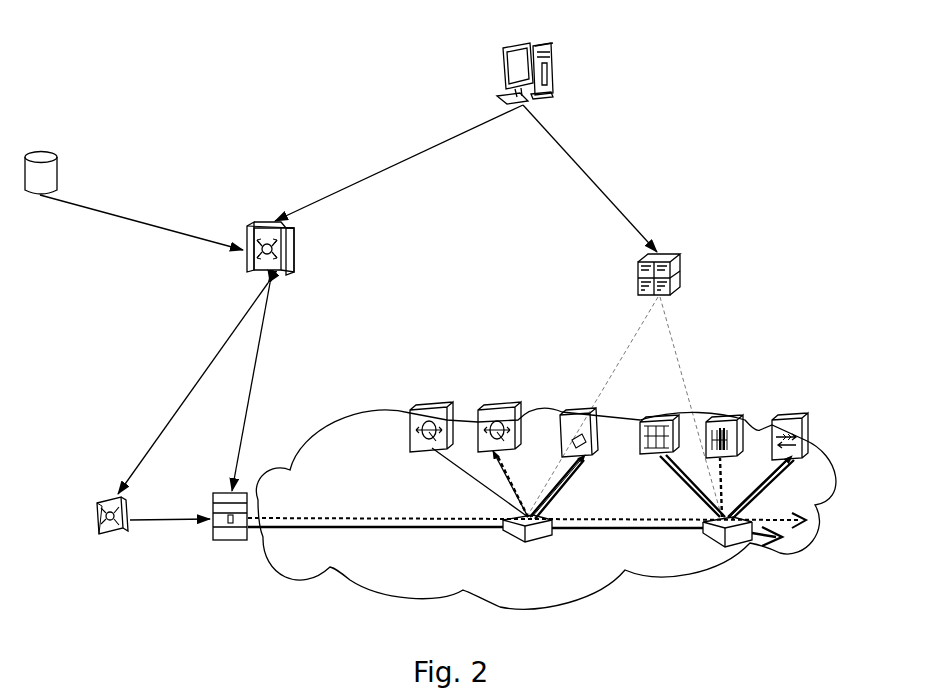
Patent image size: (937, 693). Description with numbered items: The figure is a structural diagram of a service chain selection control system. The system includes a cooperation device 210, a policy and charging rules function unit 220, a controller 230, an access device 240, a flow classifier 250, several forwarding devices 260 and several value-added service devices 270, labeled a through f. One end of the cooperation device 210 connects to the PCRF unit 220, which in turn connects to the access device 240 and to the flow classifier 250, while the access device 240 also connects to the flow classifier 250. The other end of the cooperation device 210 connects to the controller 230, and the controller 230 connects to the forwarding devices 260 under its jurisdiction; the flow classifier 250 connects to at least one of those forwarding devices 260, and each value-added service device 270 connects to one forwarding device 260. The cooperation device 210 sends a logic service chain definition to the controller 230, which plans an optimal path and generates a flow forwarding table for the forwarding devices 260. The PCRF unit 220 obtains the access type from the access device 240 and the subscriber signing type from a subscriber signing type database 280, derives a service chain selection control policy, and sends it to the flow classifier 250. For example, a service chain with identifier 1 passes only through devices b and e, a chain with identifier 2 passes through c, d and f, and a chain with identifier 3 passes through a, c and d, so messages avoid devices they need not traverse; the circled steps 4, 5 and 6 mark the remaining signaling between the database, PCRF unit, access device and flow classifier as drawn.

The cooperation device 210 is at (546, 47).
The policy and charging rules function (PCRF) unit 220 is at (297, 258).
The controller 230 is at (680, 258).
The access device 240 is at (128, 503).
The flow classifier 250 is at (250, 495).
The forwarding devices 260 is at (527, 543).
The value-added service devices 270 is at (449, 410).
The subscriber signing type database 280 is at (50, 154).
The service chain identifier 1 is at (590, 178).
The service chain identifier 2 is at (625, 407).
The service chain identifier 3 is at (399, 163).
The step 4 is at (141, 222).
The step 5 is at (193, 388).
The step 6 is at (252, 387).